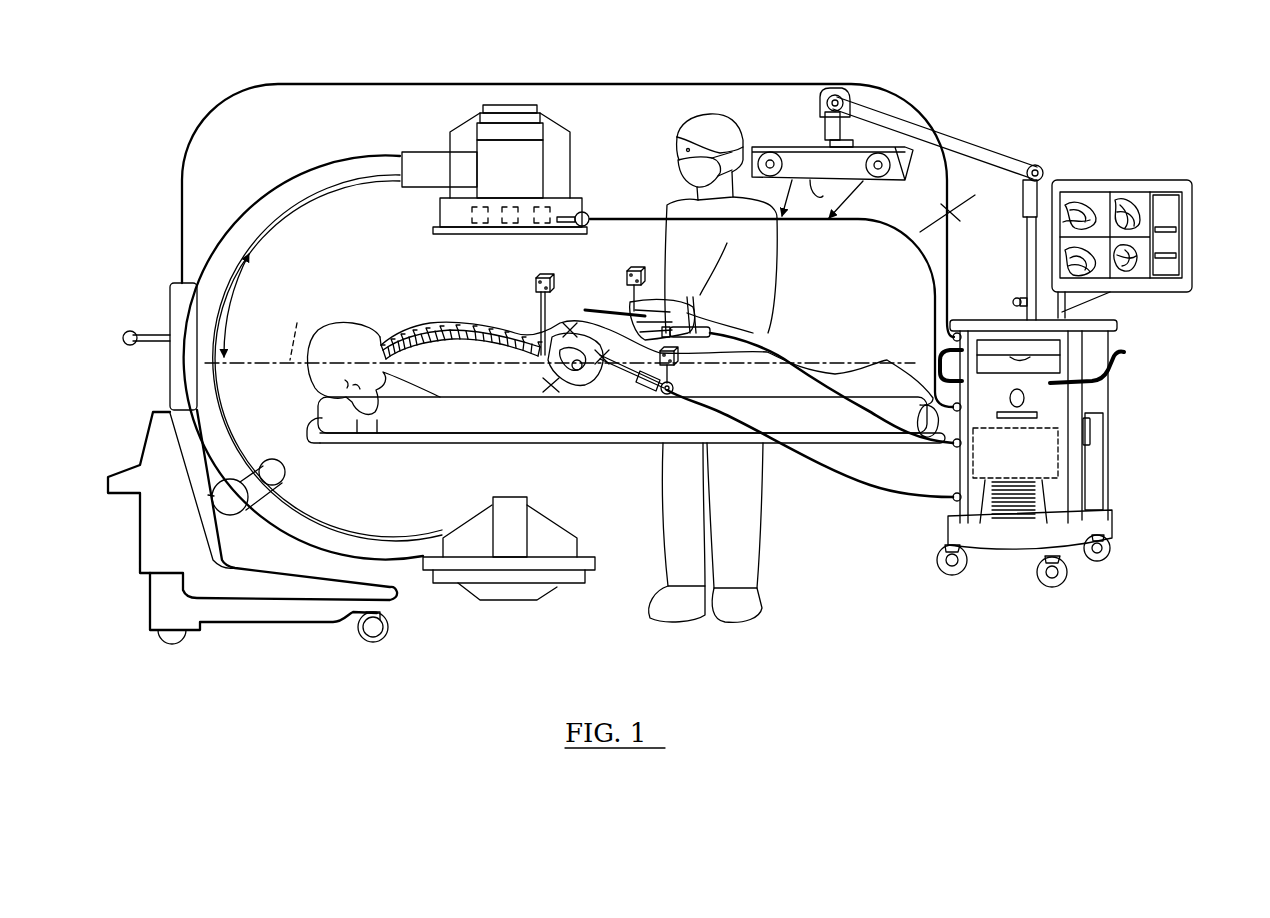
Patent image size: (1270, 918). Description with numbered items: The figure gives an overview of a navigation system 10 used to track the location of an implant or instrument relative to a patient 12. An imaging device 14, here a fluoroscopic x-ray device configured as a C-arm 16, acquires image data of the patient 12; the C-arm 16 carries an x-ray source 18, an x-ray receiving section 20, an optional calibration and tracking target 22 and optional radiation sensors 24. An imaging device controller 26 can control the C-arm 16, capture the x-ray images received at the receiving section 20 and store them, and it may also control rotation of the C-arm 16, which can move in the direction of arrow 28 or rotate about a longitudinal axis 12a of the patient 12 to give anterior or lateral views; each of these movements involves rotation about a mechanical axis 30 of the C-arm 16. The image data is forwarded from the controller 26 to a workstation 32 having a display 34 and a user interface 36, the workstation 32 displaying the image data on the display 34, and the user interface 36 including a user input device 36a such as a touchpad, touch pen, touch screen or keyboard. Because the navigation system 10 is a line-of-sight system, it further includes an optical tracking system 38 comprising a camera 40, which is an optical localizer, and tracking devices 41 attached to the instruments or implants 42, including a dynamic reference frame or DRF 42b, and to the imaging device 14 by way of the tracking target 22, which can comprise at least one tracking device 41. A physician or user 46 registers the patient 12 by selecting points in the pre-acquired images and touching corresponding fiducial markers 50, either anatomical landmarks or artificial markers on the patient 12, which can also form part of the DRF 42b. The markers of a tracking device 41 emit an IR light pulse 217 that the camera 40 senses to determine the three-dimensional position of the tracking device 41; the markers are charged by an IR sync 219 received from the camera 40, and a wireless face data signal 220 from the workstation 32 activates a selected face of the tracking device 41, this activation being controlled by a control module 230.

The navigation system 10 is at (1005, 96).
The patient 12 is at (321, 327).
The longitudinal axis 12a is at (297, 329).
The imaging device 14 is at (583, 168).
The C-arm 16 is at (300, 223).
The x-ray source 18 is at (508, 532).
The x-ray receiving section 20 is at (557, 125).
The calibration and tracking target 22 is at (450, 215).
The radiation sensors 24 is at (592, 208).
The imaging device controller 26 is at (167, 300).
The arrow 28 is at (240, 272).
The mechanical axis 30 is at (252, 478).
The workstation 32 is at (1097, 433).
The display 34 is at (1092, 178).
The user interface 36 is at (1117, 272).
The user input device 36a is at (1168, 240).
The optical tracking system 38 is at (417, 288).
The camera 40 is at (797, 134).
The tracking devices 41 is at (540, 231).
The instruments 42 is at (628, 392).
The dynamic reference frame 42b is at (535, 327).
The user 46 is at (665, 203).
The fiducial markers 50 is at (551, 393).
The IR light pulse 217 is at (855, 187).
The IR sync 219 is at (786, 186).
The wireless face data signal 220 is at (950, 212).
The control module 230 is at (1040, 422).